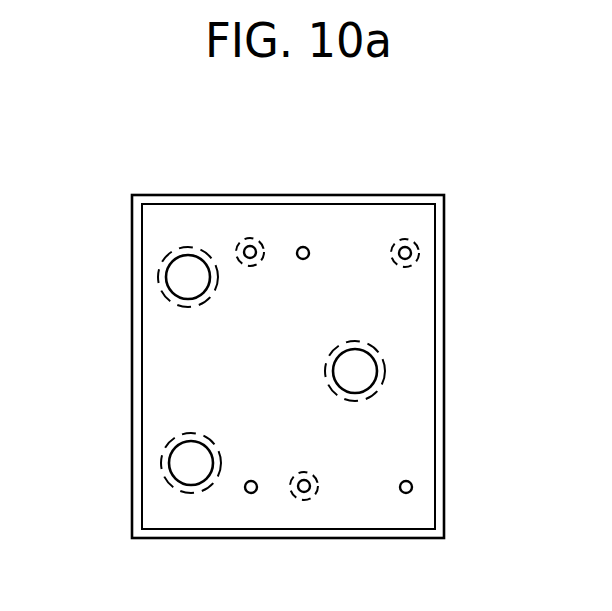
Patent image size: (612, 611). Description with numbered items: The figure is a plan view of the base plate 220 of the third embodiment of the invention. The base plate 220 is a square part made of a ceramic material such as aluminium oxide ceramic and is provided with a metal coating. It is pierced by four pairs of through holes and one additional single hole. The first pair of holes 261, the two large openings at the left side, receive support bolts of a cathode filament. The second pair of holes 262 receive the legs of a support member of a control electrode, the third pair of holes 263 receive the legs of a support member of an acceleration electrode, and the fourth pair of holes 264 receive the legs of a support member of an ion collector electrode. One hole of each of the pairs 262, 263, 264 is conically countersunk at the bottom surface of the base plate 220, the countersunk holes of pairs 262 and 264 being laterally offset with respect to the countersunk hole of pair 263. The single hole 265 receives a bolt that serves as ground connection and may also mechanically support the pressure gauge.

The base plate 220 is at (408, 290).
The first pair of through holes 261 is at (172, 281).
The second pair of through holes 262 is at (250, 246).
The third pair of through holes 263 is at (304, 247).
The fourth pair of through holes 264 is at (406, 247).
The additional single hole 265 is at (372, 369).